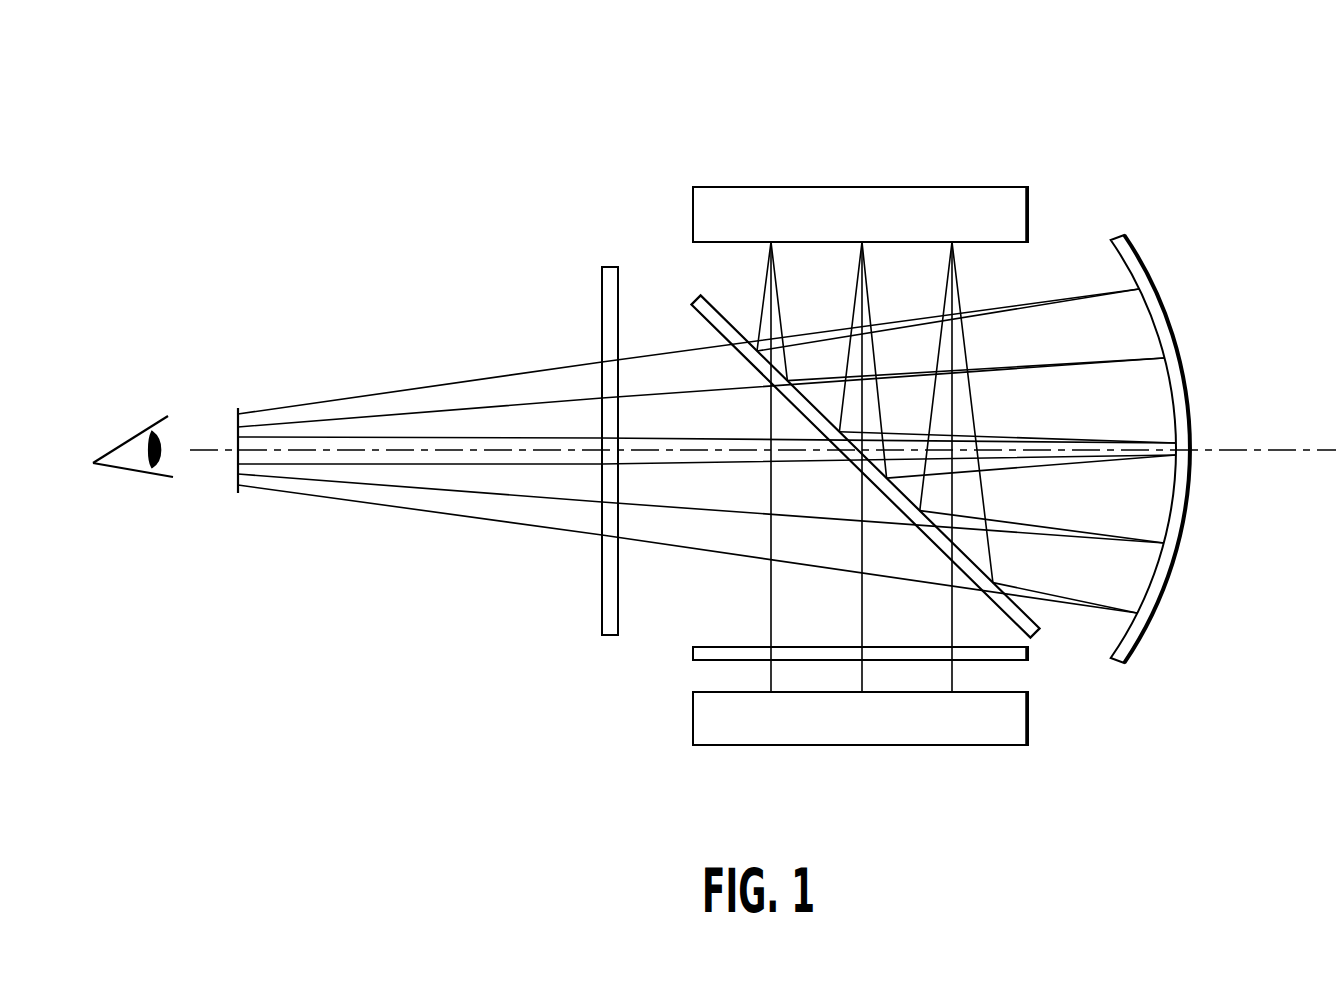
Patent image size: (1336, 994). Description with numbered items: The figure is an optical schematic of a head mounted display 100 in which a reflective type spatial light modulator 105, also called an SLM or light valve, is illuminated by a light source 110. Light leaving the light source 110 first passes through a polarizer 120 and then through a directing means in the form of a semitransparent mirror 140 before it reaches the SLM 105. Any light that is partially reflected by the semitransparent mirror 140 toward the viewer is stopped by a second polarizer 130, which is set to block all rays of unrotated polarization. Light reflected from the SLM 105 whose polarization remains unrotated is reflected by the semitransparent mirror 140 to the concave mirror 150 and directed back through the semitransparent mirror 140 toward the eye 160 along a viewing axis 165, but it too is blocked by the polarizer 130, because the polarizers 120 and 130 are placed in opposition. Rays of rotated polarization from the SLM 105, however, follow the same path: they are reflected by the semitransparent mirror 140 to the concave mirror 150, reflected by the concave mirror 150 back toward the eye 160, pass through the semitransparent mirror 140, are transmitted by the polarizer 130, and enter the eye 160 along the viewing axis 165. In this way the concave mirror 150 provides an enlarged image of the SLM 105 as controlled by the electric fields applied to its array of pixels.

The head mounted display 100 is at (1162, 122).
The reflective type spatial light modulator 105 is at (845, 198).
The light source 110 is at (848, 733).
The polarizer 120 is at (693, 651).
The polarizer 130 is at (603, 634).
The semitransparent mirror 140 is at (693, 300).
The concave mirror 150 is at (1172, 323).
The eye 160 is at (118, 425).
The viewing axis 165 is at (1272, 448).